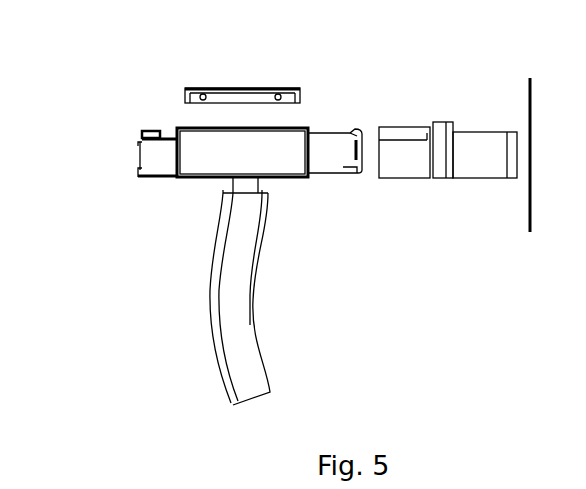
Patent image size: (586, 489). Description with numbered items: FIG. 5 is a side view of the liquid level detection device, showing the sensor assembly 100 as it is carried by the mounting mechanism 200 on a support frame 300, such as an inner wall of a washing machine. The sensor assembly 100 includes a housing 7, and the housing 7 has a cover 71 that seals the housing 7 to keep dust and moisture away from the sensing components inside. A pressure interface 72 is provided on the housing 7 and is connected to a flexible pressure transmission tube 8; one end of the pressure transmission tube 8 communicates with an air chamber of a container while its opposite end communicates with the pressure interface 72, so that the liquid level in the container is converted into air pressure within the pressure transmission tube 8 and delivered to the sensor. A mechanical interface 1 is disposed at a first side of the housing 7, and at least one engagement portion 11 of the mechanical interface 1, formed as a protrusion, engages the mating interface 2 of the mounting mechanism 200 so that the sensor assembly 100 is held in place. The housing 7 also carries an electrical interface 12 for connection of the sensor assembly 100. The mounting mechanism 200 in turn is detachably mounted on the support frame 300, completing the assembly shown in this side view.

The sensor assembly 100 is at (138, 265).
The mounting mechanism 200 is at (459, 217).
The support frame 300 is at (532, 193).
The mechanical interface 1 is at (330, 165).
The engagement portion 11 is at (350, 173).
The electrical interface 12 is at (155, 163).
The mating interface 2 is at (403, 168).
The housing 7 is at (205, 160).
The cover 71 is at (235, 95).
The pressure interface 72 is at (252, 183).
The pressure transmission tube 8 is at (235, 330).